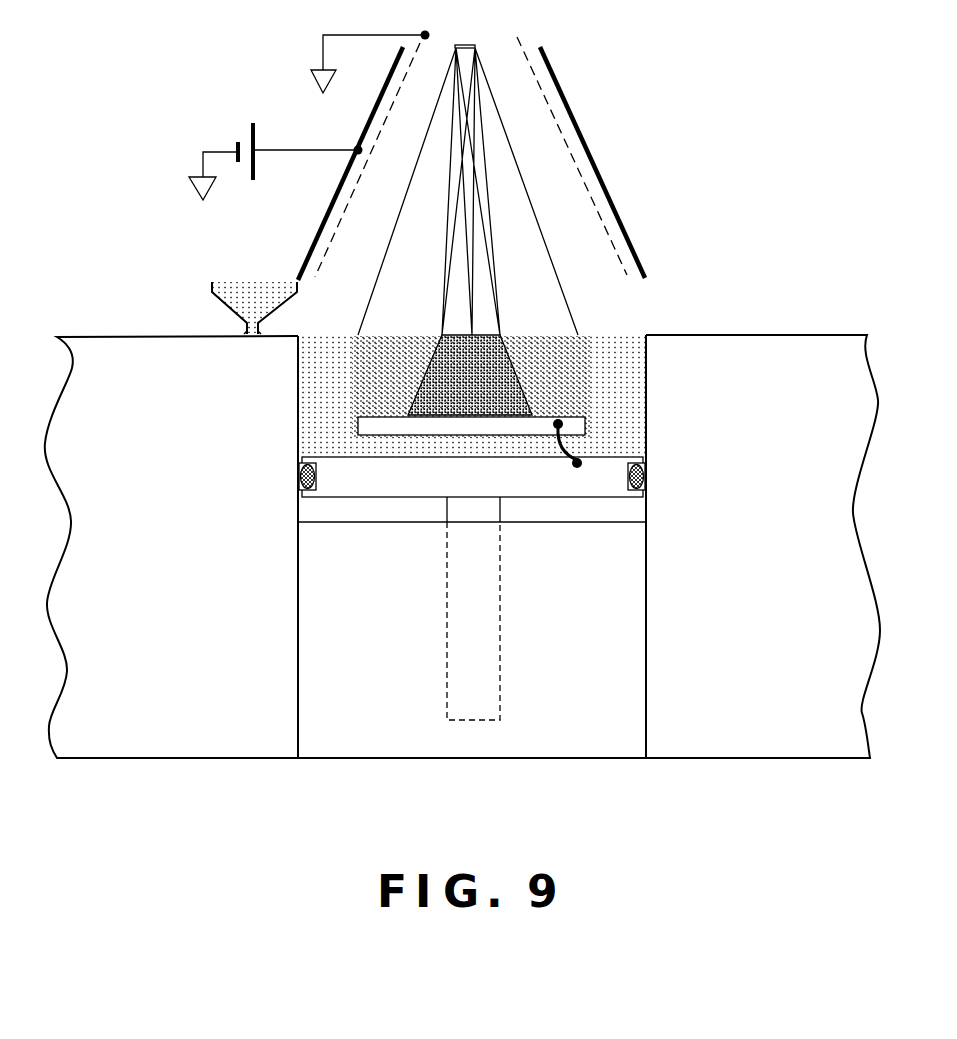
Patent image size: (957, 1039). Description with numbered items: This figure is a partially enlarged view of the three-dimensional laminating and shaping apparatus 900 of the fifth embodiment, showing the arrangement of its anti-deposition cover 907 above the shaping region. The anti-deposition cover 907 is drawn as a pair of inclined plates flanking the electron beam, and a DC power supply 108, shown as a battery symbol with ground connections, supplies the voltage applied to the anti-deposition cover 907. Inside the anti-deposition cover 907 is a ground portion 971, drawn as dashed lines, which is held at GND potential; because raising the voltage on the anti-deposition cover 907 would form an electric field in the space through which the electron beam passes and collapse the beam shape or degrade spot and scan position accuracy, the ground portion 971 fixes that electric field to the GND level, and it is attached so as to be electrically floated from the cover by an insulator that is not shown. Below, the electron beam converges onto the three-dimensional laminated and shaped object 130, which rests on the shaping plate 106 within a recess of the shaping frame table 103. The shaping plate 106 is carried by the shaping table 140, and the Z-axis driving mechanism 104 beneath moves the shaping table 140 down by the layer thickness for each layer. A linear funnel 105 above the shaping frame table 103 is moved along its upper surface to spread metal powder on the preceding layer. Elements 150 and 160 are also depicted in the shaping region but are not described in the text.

The three-dimensional laminating and shaping apparatus 900 is at (155, 114).
The DC power supply 108 is at (253, 123).
The anti-deposition cover 907 is at (590, 145).
The ground portion 971 is at (610, 238).
The linear funnel 105 is at (226, 305).
The shaping frame table 103 is at (800, 335).
The three-dimensional laminated and shaped object 130 is at (523, 383).
The shaping plate 106 is at (380, 423).
The shaping table 140 is at (547, 487).
The seal member 160 is at (647, 475).
The thermocouple 150 is at (565, 445).
The Z-axis driving mechanism 104 is at (470, 705).